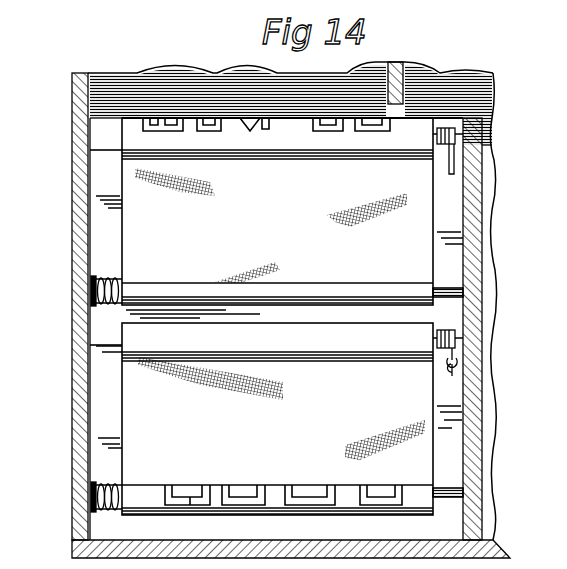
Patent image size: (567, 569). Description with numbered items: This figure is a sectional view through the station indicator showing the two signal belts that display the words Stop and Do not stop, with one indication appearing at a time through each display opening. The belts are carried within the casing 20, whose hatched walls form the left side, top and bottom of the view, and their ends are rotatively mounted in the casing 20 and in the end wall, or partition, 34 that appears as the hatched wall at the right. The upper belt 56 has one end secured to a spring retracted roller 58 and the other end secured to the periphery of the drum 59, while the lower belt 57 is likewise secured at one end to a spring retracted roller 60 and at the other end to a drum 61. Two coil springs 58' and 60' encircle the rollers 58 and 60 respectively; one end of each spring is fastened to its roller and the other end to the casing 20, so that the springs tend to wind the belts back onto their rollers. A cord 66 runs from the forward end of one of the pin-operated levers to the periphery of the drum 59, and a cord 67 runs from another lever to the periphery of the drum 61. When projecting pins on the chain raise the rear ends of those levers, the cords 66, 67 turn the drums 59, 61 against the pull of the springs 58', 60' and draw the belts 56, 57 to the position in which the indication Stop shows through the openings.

The casing 20 is at (72, 188).
The end wall 34 is at (482, 228).
The belt 56 is at (277, 211).
The belt 57 is at (277, 419).
The spring retracted roller 58 is at (429, 277).
The coil spring 58' is at (125, 278).
The drum 59 is at (113, 150).
The spring retracted roller 60 is at (427, 478).
The coil spring 60' is at (123, 482).
The drum 61 is at (438, 345).
The cord 66 is at (448, 165).
The cord 67 is at (448, 378).